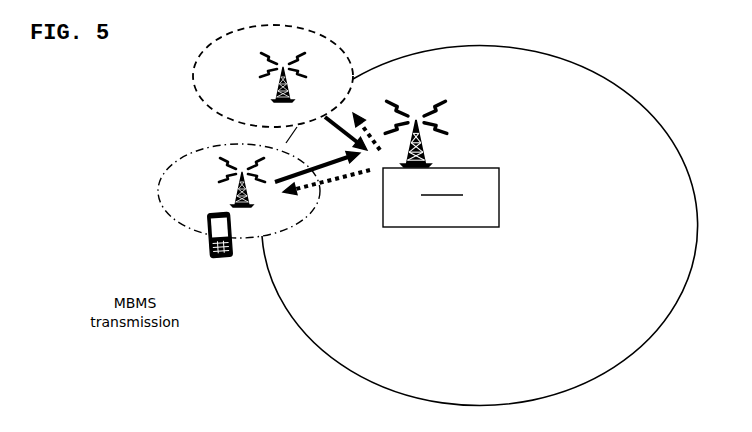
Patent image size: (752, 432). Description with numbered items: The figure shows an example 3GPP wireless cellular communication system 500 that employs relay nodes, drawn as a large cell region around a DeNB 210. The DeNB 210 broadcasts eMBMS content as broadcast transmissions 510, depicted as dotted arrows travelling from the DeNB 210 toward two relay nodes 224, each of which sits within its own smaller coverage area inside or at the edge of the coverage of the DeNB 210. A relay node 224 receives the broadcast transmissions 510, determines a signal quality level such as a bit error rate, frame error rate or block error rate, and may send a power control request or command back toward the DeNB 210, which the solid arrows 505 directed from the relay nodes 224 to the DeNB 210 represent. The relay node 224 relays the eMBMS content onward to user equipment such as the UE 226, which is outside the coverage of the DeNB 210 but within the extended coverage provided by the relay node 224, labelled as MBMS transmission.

The wireless cellular communication system 500 is at (627, 57).
The DeNB 210 is at (450, 123).
The relay node 224 is at (307, 77).
The UE 226 is at (205, 252).
The uplink transmission from relay nodes 505 is at (330, 156).
The broadcast transmissions 510 is at (303, 190).